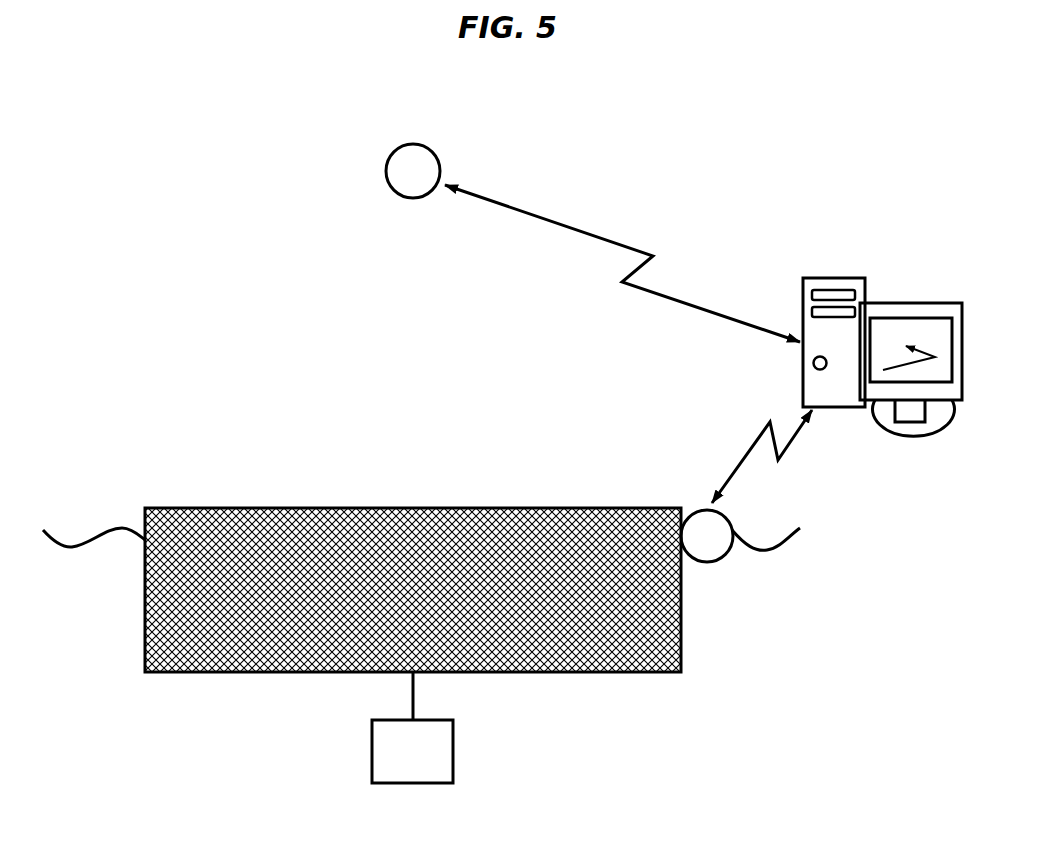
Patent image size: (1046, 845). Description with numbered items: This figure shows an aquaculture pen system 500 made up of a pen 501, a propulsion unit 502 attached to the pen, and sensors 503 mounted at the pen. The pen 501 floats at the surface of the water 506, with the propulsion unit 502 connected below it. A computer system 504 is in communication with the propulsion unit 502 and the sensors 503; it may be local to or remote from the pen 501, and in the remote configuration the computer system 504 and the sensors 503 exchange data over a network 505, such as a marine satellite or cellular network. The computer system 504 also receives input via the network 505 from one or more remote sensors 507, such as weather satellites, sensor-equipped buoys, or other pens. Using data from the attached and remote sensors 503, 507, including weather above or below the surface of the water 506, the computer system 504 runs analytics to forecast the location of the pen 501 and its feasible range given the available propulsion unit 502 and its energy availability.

The system 500 is at (263, 362).
The pen 501 is at (242, 508).
The propulsion unit 502 is at (372, 755).
The sensors 503 is at (697, 508).
The computer system 504 is at (802, 302).
The network 505 is at (728, 315).
The water 506 is at (107, 532).
The remote sensors 507 is at (392, 148).